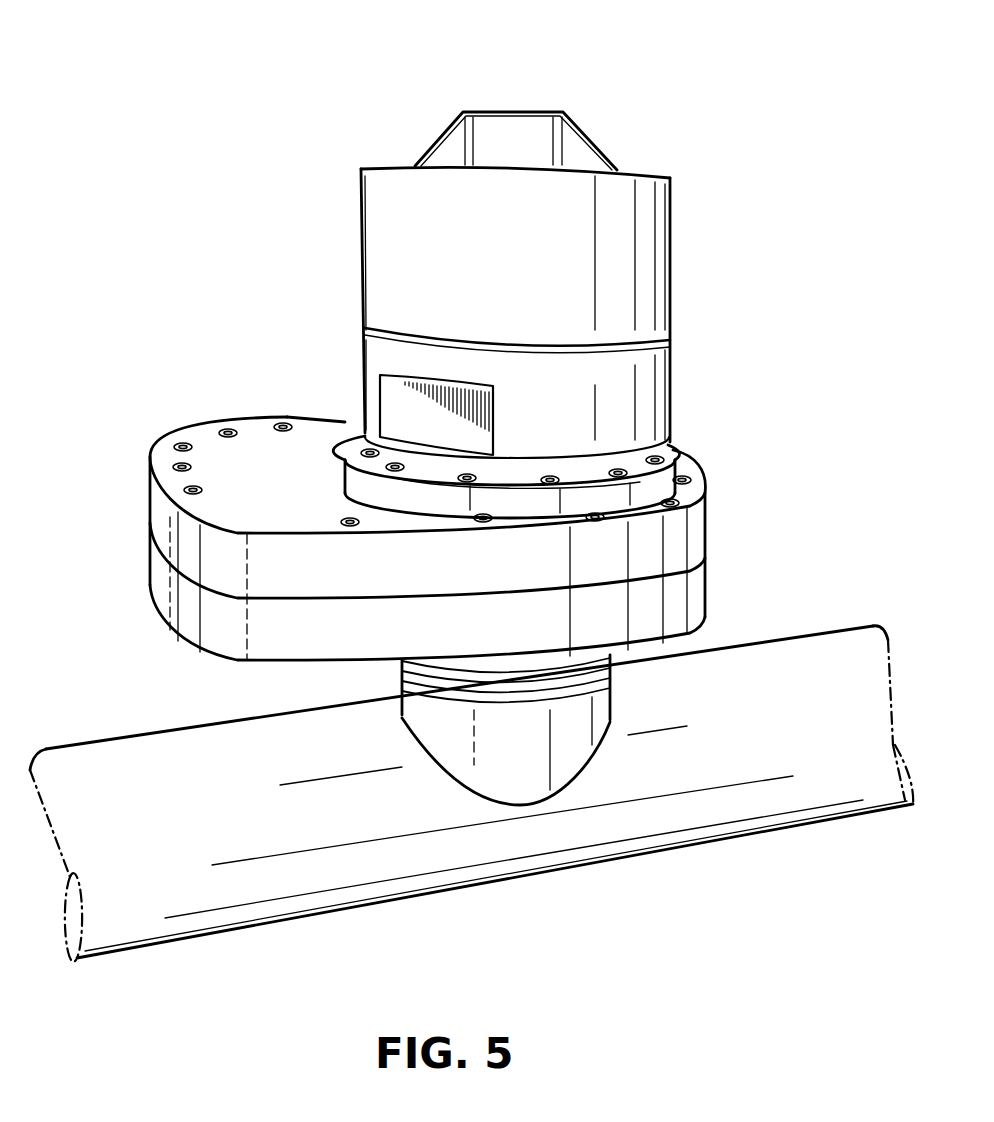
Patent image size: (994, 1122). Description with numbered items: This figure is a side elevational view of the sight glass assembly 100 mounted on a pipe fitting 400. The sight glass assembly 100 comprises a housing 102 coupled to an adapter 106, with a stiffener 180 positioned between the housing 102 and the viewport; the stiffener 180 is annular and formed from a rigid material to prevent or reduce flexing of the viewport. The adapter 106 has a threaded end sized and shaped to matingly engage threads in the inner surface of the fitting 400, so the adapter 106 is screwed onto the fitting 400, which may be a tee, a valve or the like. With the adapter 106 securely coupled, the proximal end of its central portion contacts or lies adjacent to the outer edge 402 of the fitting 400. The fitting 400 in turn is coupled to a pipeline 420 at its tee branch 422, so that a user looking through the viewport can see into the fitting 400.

The sight glass assembly 100 is at (260, 48).
The housing 102 is at (632, 215).
The adapter 106 is at (642, 368).
The stiffener 180 is at (529, 135).
The pipe fitting 400 is at (213, 643).
The outer edge 402 is at (352, 443).
The pipeline 420 is at (845, 778).
The tee branch 422 is at (567, 750).